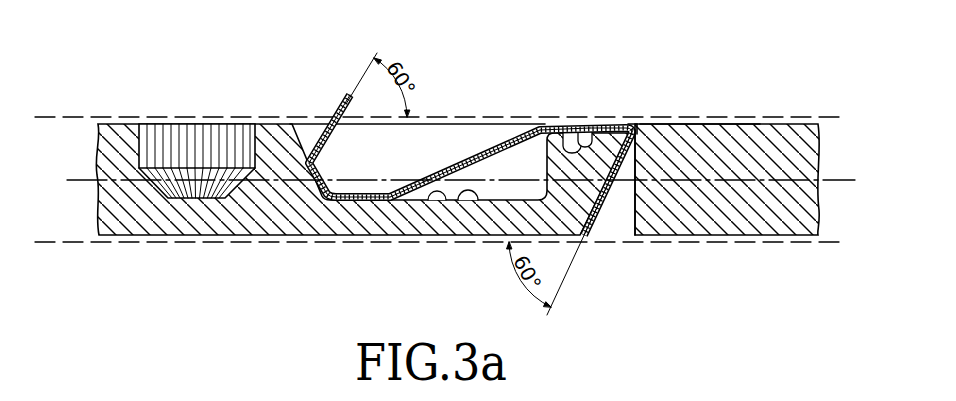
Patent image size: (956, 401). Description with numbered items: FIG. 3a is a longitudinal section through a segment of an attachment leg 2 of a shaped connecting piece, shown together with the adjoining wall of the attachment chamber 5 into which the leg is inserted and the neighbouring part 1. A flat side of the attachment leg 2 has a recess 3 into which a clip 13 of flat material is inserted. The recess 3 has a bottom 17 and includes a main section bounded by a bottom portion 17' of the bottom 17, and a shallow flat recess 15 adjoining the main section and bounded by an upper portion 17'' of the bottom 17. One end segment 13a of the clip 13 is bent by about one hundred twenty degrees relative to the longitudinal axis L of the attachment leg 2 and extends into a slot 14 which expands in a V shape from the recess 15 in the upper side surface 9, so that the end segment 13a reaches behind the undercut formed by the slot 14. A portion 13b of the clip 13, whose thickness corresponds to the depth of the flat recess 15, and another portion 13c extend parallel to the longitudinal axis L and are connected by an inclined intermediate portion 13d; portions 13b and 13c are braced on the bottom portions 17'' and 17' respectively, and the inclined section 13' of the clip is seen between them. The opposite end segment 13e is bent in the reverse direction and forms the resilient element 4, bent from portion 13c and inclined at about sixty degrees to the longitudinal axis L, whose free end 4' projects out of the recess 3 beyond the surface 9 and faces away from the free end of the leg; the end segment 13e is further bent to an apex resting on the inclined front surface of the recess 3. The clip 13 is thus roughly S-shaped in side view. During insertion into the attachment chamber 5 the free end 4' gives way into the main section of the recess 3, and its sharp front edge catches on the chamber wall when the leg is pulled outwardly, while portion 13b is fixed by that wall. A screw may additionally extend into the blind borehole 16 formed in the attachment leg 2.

The first housing part 1 is at (768, 120).
The attachment leg 2 is at (112, 127).
The recess 3 is at (478, 133).
The resilient element 4 is at (292, 113).
The free end 4' is at (341, 71).
The attachment chamber 5 is at (70, 122).
The upper side surface 9 is at (707, 126).
The clip 13 is at (452, 163).
The end segment 13a is at (612, 214).
The portion 13b is at (567, 140).
The portion 13c is at (367, 193).
The inclined intermediate portion 13d is at (507, 130).
The end segment 13e is at (300, 135).
The inclined strip section 13' is at (462, 163).
The slot 14 is at (630, 223).
The flat recess 15 is at (631, 128).
The blind borehole 16 is at (165, 137).
The bottom 17 is at (415, 239).
The bottom portion 17' is at (468, 195).
The upper portion 17'' is at (596, 106).
The longitudinal axis L is at (828, 178).